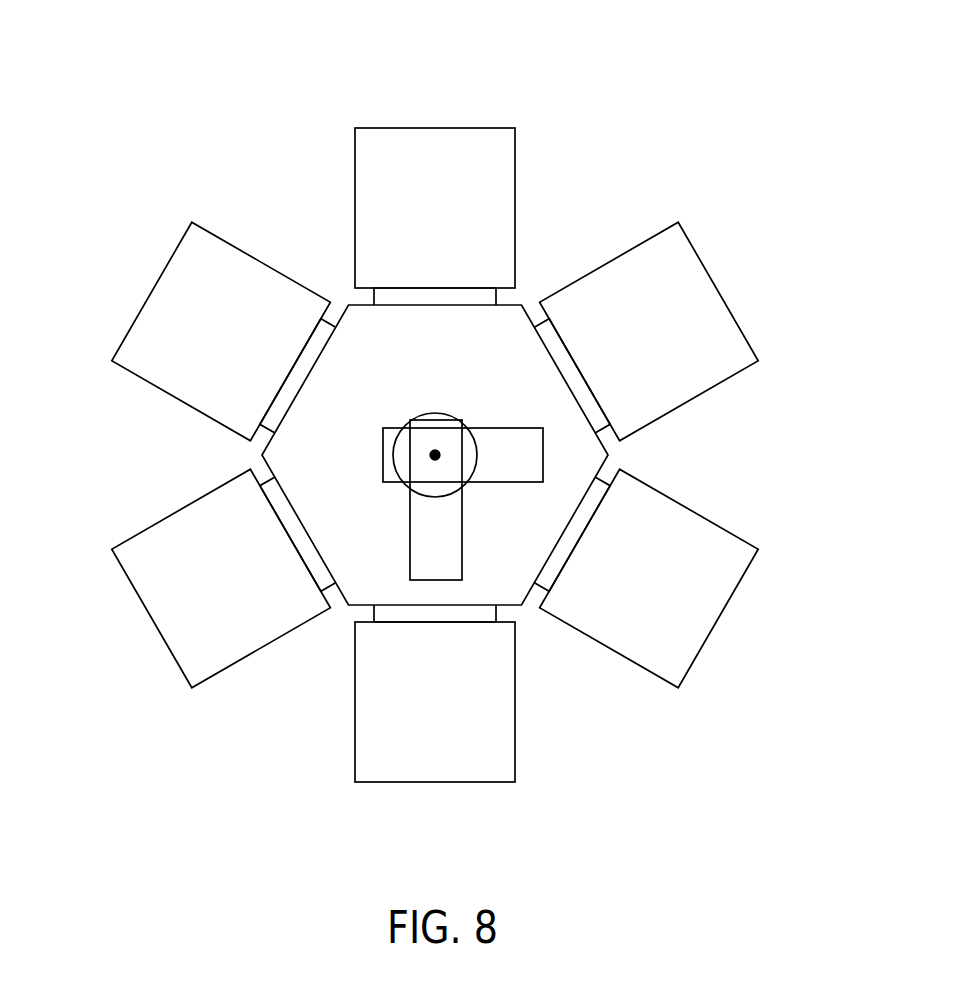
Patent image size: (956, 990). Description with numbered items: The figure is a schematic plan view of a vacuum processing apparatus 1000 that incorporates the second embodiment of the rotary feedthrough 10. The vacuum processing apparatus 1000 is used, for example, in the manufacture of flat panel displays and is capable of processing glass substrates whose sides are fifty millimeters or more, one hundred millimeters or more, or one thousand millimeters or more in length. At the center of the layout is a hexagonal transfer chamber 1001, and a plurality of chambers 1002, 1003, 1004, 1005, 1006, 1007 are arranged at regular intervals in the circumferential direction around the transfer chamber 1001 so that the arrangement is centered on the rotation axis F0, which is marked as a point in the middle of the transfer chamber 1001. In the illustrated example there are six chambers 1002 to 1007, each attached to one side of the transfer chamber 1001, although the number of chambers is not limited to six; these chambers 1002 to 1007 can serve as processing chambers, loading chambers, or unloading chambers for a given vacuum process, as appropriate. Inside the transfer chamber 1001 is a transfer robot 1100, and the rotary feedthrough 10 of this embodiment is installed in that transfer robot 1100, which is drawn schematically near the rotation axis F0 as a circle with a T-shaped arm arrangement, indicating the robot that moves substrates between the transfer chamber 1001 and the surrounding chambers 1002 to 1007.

The vacuum processing apparatus 1000 is at (188, 70).
The transfer chamber 1001 is at (525, 305).
The chamber 1002 is at (703, 645).
The chamber 1003 is at (733, 315).
The chamber 1004 is at (493, 101).
The chamber 1005 is at (169, 264).
The chamber 1006 is at (137, 595).
The chamber 1007 is at (405, 784).
The rotary feedthrough 10 is at (465, 483).
The transfer robot 1100 is at (506, 590).
The rotation axis F0 is at (436, 448).